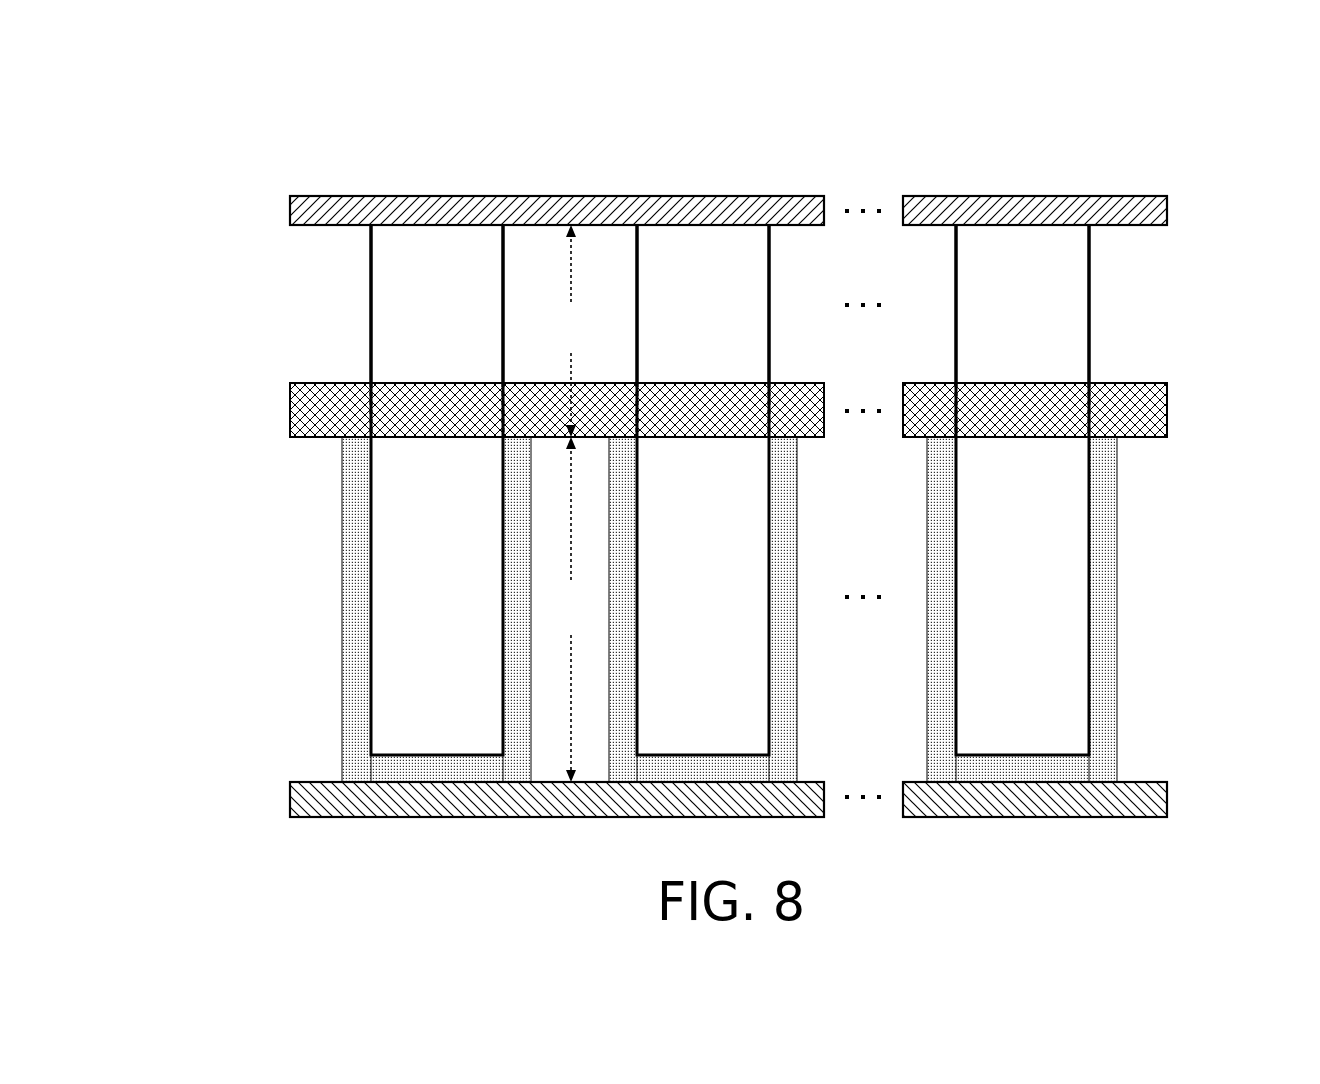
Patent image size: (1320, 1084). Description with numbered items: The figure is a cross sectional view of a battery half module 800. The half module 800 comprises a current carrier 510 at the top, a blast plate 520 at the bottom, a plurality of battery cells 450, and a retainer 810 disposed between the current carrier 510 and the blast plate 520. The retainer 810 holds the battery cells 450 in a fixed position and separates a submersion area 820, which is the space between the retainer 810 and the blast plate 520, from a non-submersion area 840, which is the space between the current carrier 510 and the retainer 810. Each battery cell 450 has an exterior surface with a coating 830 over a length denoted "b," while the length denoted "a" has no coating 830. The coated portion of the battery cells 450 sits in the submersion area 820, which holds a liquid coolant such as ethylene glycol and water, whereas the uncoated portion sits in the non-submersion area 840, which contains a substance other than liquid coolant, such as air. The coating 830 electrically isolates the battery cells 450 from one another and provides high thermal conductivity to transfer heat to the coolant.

The half module 800 is at (252, 122).
The current carrier 510 is at (289, 212).
The blast plate 520 is at (290, 798).
The retainer 810 is at (290, 410).
The submersion area 820 is at (317, 543).
The coating 830 is at (342, 674).
The non-submersion area 840 is at (330, 303).
The battery cells 450 is at (411, 503).